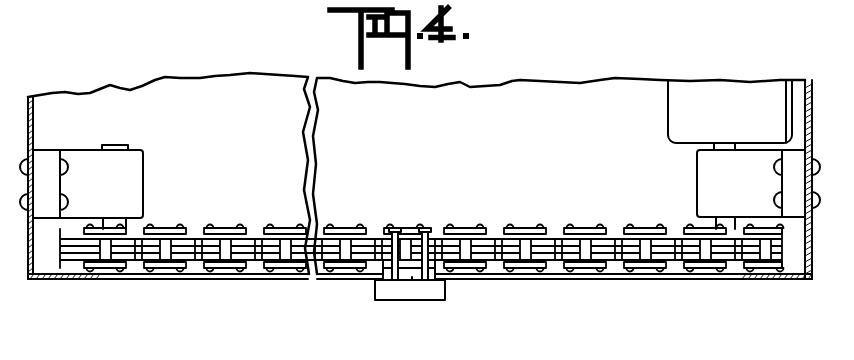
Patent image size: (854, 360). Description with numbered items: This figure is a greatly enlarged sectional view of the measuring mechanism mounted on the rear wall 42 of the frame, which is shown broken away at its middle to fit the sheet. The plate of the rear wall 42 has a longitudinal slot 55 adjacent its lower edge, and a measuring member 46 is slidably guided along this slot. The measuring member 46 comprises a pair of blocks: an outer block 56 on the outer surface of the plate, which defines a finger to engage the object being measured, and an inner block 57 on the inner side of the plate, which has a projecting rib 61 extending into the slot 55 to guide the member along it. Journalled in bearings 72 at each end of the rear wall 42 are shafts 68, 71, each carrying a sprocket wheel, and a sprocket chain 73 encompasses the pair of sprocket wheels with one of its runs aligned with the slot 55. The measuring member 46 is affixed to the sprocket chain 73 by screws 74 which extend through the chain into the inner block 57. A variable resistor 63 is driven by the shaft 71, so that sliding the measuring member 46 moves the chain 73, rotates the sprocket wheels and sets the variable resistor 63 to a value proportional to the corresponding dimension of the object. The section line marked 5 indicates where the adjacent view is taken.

The section line 5- 5 is at (34, 287).
The rear wall 42 is at (80, 282).
The measuring member 46 is at (405, 303).
The longitudinal slot 55 is at (578, 277).
The block 56 is at (443, 290).
The block 57 is at (433, 248).
The rib 61 is at (412, 277).
The variable resistor 63 is at (668, 107).
The shaft 68 is at (130, 225).
The shaft 71 is at (722, 224).
The bearings 72 is at (722, 163).
The sprocket chain 73 is at (237, 247).
The screws 74 is at (423, 230).